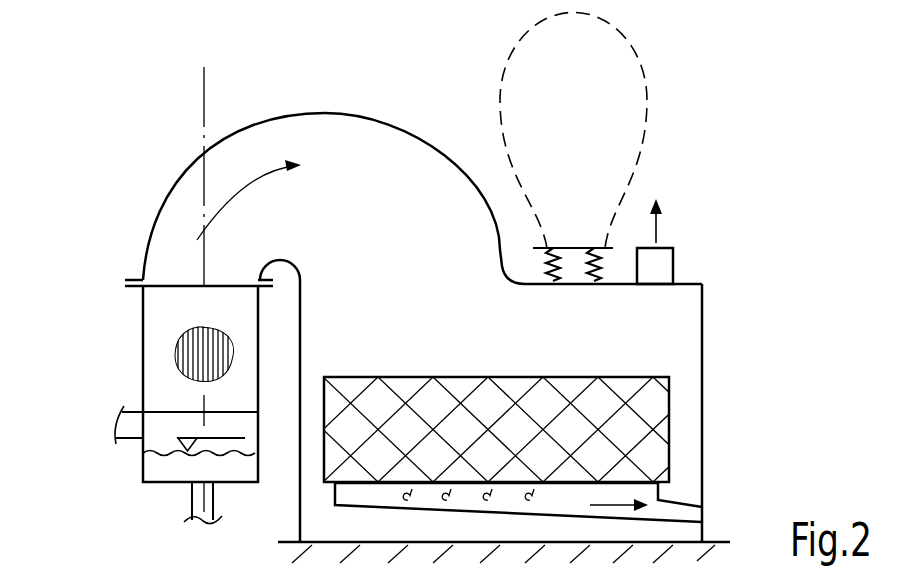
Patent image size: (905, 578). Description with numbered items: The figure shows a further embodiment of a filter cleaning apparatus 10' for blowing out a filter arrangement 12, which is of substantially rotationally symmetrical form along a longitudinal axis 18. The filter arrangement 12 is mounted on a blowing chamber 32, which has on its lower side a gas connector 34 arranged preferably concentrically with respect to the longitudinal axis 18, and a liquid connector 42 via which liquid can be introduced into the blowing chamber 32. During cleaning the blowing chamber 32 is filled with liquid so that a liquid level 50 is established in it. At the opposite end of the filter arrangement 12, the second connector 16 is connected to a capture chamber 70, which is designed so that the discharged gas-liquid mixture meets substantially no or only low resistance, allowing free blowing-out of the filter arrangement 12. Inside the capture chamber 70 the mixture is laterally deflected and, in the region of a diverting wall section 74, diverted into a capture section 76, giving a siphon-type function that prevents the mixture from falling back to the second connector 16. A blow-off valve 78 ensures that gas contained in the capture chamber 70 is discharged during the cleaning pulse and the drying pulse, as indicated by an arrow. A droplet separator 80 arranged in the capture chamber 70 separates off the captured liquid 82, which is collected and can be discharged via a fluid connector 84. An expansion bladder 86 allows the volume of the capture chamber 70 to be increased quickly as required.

The filter cleaning apparatus 10' is at (556, 314).
The filter arrangement 12 is at (135, 352).
The second connector 16 is at (178, 281).
The longitudinal axis 18 is at (204, 112).
The blowing chamber 32 is at (143, 462).
The gas connector 34 is at (203, 497).
The liquid connector 42 is at (147, 426).
The liquid level 50 is at (198, 438).
The capture chamber 70 is at (334, 152).
The diverting wall section 74 is at (317, 108).
The capture section 76 is at (478, 339).
The blow-off valve 78 is at (657, 268).
The droplet separator 80 is at (627, 427).
The captured liquid 82 is at (613, 503).
The fluid connector 84 is at (702, 527).
The expansion bladder 86 is at (600, 266).